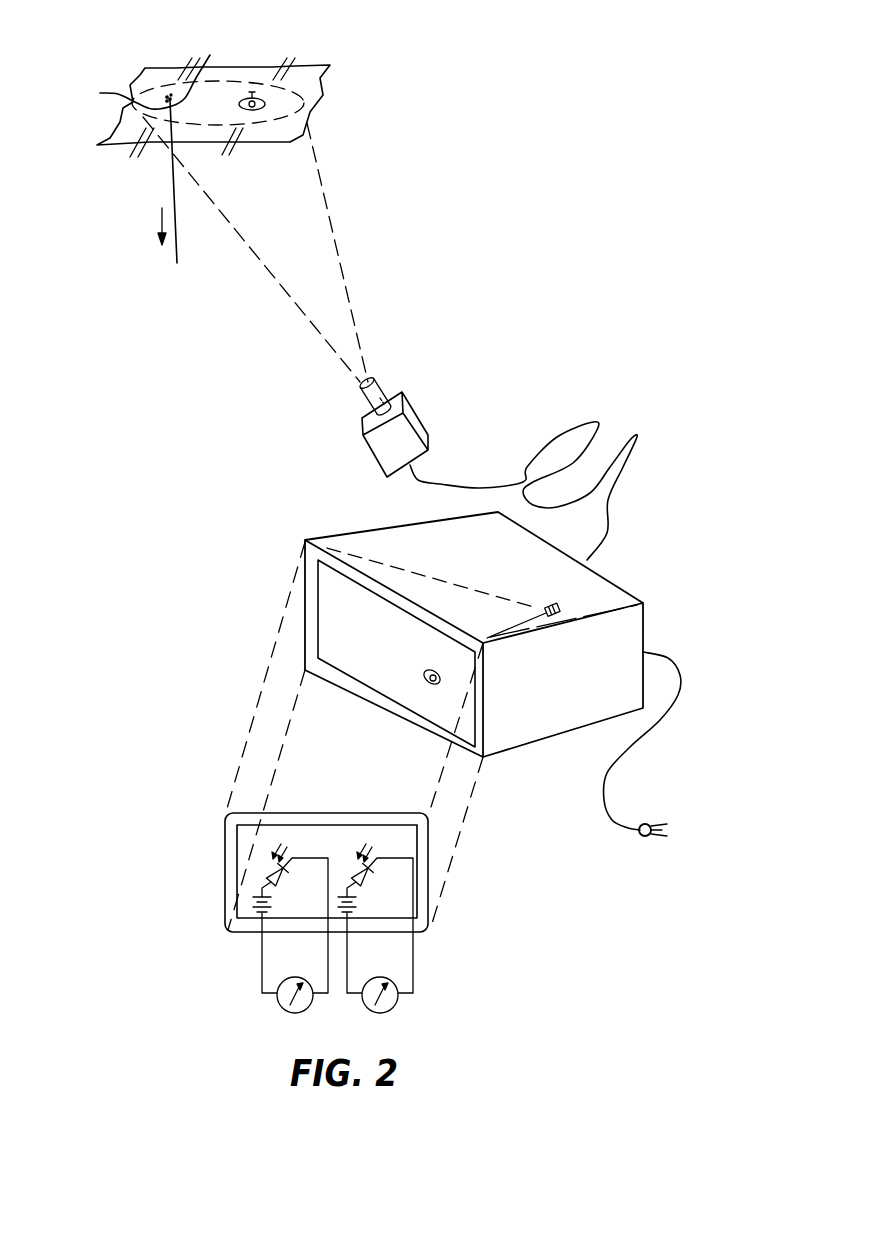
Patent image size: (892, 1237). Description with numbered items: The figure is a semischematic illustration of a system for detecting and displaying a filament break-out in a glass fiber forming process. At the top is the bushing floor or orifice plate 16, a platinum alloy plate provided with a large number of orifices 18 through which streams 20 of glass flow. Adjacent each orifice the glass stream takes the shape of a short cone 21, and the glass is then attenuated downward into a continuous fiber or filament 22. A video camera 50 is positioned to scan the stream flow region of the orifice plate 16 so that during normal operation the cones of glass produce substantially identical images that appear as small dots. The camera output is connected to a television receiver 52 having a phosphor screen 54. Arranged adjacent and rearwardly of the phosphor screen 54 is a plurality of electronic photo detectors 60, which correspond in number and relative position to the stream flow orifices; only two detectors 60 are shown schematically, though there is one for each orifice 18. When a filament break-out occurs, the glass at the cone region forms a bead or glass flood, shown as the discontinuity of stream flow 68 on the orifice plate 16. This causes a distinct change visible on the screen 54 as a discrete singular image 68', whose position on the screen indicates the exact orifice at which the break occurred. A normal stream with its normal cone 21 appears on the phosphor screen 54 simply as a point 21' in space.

The orifice plate 16 is at (306, 82).
The orifice 18 is at (165, 94).
The stream of glass 20 is at (141, 82).
The cone 21 is at (218, 81).
The filament 22 is at (172, 193).
The video camera 50 is at (412, 415).
The television receiver 52 is at (374, 531).
The phosphor screen 54 is at (330, 583).
The electronic photo detector 60 is at (298, 867).
The discontinuity of stream flow 68 is at (267, 137).
The point 21' is at (333, 681).
The discrete singular image 68' is at (395, 705).